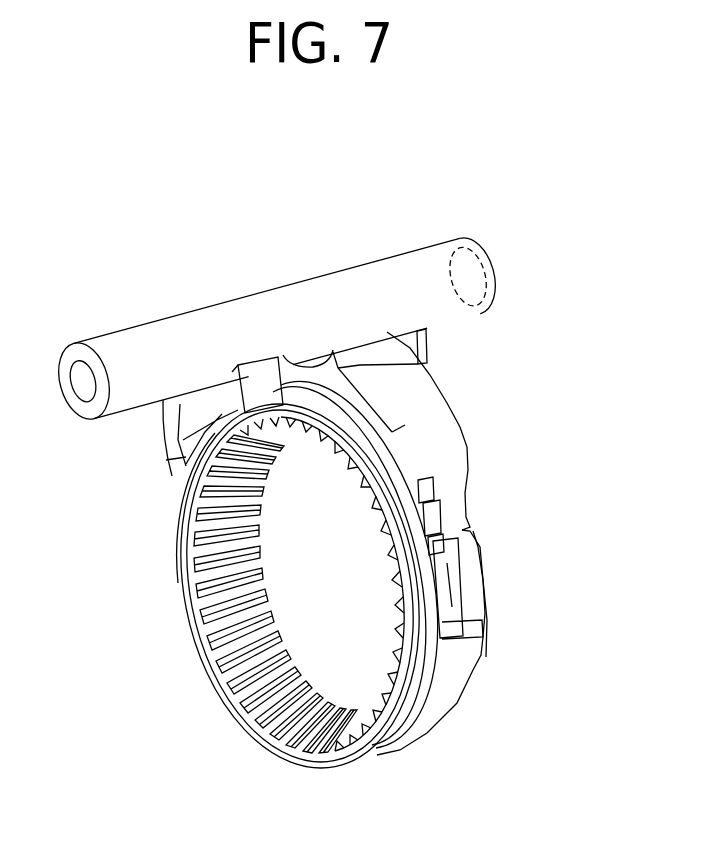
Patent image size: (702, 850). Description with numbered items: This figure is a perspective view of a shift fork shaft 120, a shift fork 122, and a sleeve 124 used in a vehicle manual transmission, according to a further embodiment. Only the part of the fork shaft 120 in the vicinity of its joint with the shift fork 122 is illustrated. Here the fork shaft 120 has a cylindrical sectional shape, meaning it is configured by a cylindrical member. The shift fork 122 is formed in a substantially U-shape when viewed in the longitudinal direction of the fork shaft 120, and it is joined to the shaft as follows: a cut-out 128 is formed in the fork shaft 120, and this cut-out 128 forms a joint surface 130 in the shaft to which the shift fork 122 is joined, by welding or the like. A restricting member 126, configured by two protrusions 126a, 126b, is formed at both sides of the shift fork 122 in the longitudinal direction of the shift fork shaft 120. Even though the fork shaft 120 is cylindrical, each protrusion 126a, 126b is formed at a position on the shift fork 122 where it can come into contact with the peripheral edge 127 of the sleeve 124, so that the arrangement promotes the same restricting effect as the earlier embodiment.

The shift fork shaft 120 is at (152, 290).
The shift fork 122 is at (492, 428).
The sleeve 124 is at (260, 599).
The restricting member 126 is at (302, 330).
The protrusion 126a is at (243, 412).
The protrusion 126b is at (413, 343).
The peripheral edge 127 is at (376, 746).
The cut-out 128 is at (370, 312).
The joint surface 130 is at (285, 357).